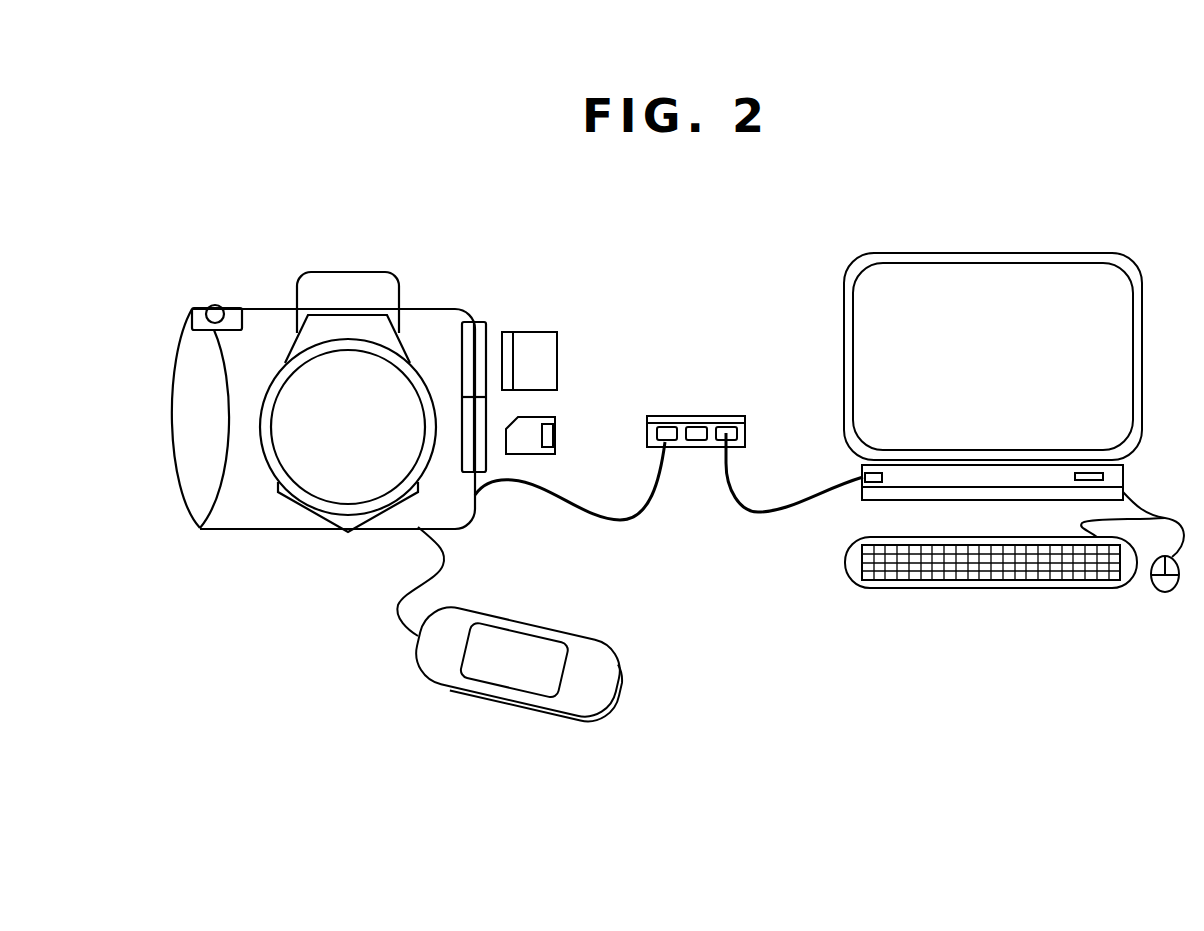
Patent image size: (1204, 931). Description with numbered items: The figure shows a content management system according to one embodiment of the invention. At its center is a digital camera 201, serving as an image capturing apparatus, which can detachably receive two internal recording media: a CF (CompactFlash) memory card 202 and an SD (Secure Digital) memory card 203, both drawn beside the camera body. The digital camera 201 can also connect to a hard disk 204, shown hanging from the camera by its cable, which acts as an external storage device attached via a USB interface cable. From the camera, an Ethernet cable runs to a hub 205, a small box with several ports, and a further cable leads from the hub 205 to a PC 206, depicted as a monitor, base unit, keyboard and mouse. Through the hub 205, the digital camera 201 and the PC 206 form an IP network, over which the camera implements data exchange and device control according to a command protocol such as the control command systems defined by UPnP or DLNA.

The digital camera 201 is at (350, 272).
The CF memory card 202 is at (532, 331).
The SD memory card 203 is at (557, 431).
The hard disk 204 is at (538, 620).
The hub 205 is at (702, 416).
The PC 206 is at (992, 252).